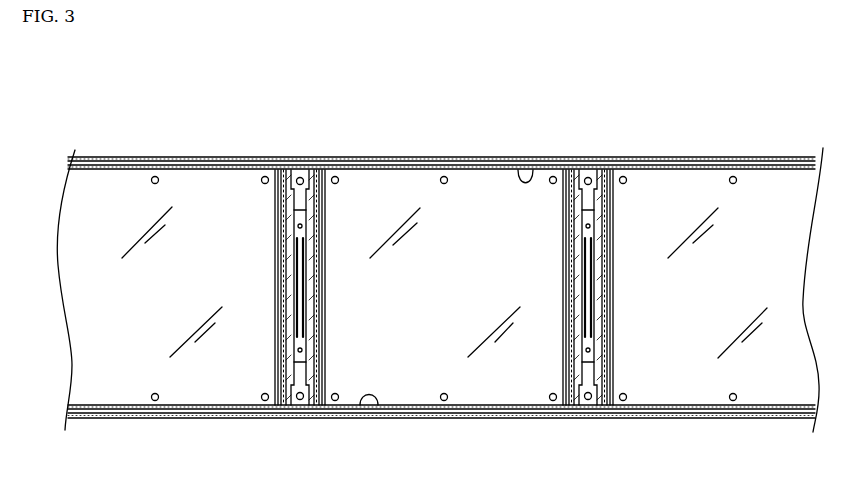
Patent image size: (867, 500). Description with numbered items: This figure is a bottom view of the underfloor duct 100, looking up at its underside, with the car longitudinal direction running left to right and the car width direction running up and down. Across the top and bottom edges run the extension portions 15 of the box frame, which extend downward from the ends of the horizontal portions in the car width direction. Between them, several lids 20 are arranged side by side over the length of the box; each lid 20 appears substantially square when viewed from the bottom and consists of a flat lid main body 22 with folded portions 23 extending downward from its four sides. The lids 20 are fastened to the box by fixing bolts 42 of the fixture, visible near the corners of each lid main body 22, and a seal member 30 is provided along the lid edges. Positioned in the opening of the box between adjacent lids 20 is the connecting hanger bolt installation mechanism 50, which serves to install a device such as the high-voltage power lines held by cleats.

The underfloor duct 100 is at (627, 112).
The extension portion 15 is at (488, 158).
The lid 20 is at (200, 166).
The lid main body 22 is at (191, 393).
The folded portion 23 is at (527, 176).
The seal member 30 is at (281, 160).
The fixing bolt 42 is at (444, 176).
The connecting hanger bolt installation mechanism 50 is at (300, 170).